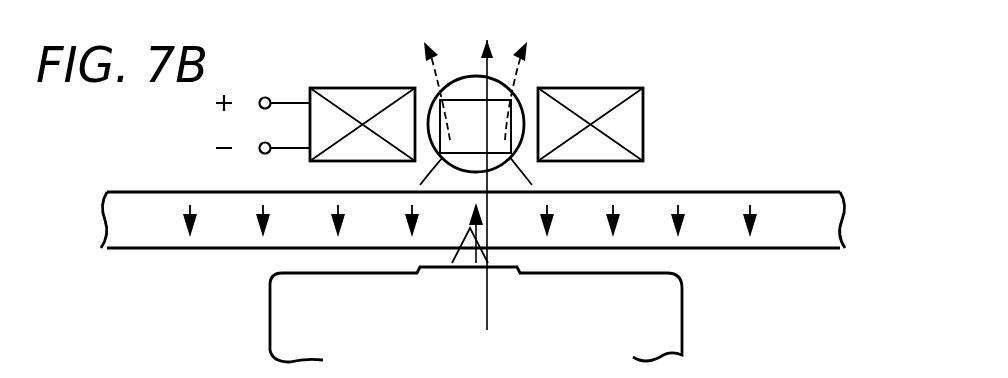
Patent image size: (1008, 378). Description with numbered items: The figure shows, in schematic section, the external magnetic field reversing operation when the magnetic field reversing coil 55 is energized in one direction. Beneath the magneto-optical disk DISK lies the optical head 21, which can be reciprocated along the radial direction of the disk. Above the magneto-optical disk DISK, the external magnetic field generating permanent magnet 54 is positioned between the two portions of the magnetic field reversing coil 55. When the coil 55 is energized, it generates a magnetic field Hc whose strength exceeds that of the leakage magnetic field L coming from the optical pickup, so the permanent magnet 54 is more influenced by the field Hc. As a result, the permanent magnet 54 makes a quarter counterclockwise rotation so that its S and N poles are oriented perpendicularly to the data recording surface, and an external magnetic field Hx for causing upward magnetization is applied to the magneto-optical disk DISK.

The magnetic field reversing coil 55 is at (370, 103).
The external magnetic field generating permanent magnet 54 is at (445, 110).
The magnetic field Hc is at (507, 87).
The external magnetic field Hx is at (487, 297).
The magneto-optical disk DISK is at (790, 205).
The light beam / heated spot L is at (460, 247).
The optical head 21 is at (665, 335).